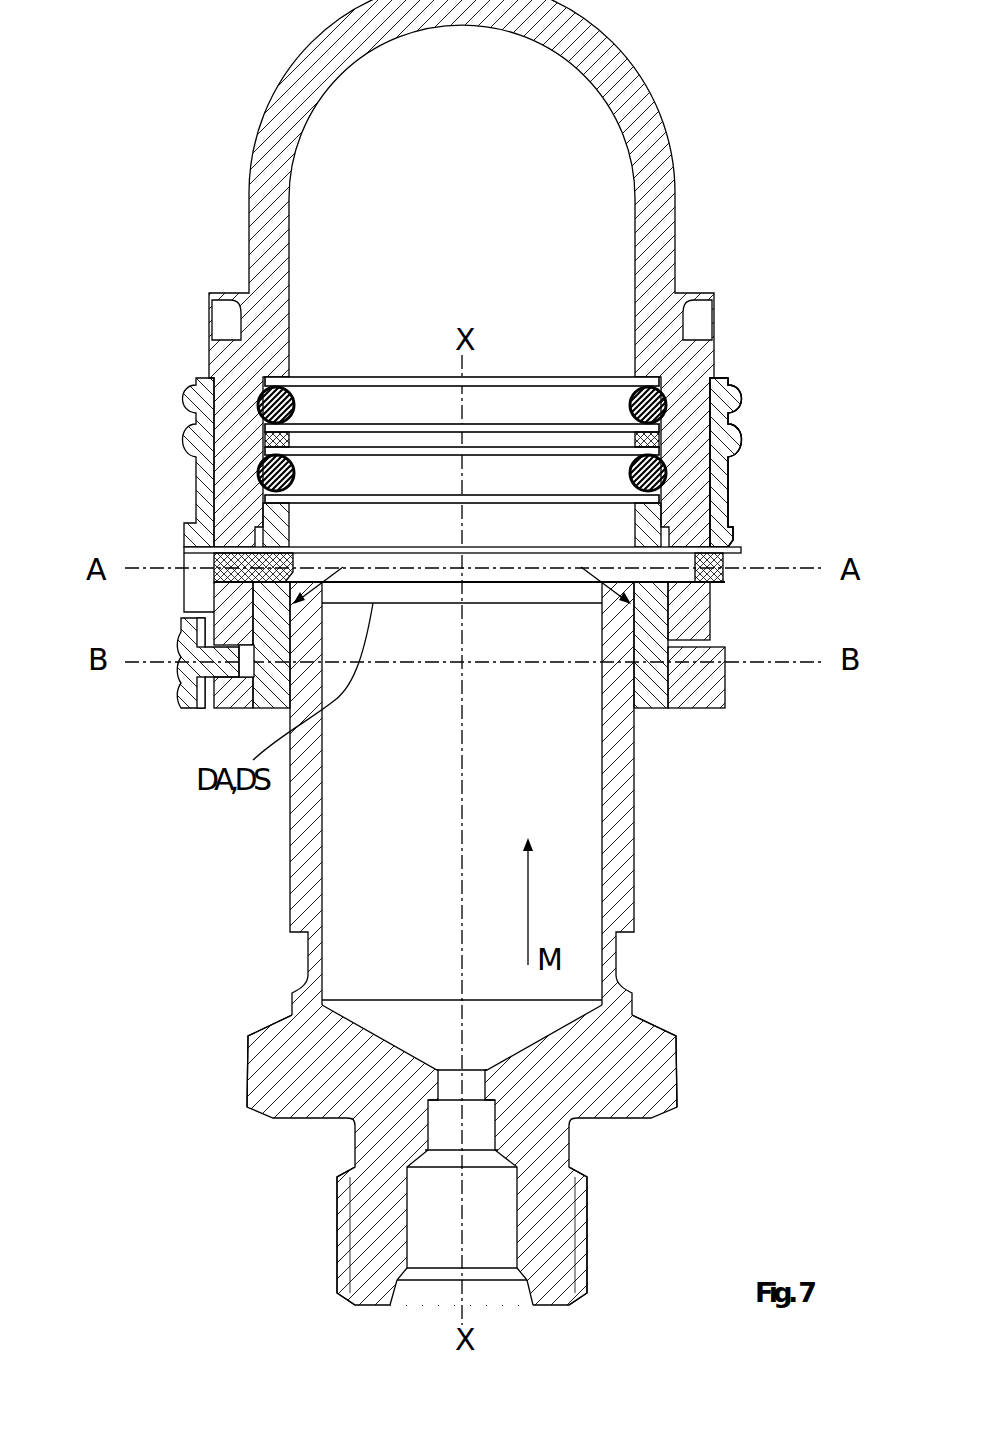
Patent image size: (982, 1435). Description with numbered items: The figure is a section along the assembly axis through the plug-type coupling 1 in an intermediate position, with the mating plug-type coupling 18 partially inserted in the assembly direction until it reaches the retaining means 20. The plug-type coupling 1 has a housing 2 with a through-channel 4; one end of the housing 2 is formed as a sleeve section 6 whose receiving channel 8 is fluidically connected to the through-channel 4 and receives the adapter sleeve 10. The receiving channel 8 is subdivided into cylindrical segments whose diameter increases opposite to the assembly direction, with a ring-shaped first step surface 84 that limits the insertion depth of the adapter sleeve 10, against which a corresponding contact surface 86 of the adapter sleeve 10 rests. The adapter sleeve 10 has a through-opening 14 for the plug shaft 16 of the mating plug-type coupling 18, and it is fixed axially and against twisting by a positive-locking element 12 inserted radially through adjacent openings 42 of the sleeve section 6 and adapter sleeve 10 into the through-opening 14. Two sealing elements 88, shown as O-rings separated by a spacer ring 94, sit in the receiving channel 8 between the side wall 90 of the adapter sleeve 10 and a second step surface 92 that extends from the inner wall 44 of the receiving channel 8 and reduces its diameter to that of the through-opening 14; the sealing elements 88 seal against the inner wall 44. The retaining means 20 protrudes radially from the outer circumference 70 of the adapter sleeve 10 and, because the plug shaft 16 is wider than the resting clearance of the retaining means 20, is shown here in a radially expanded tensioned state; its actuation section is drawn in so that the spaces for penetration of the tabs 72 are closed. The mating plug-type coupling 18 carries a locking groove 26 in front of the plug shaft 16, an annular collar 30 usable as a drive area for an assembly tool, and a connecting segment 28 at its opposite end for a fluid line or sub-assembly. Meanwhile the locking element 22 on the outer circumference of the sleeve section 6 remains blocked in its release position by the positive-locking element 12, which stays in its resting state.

The plug-type coupling 1 is at (216, 158).
The housing 2 is at (643, 143).
The through-channel 4 is at (449, 205).
The sleeve section 6 is at (697, 612).
The receiving channel 8 is at (552, 463).
The adapter sleeve 10 is at (700, 680).
The positive-locking element 12 is at (193, 522).
The through-opening 14 is at (657, 377).
The plug shaft 16 is at (615, 775).
The mating plug-type coupling 18 is at (226, 1013).
The retaining means 20 is at (192, 673).
The locking element 22 is at (733, 515).
The locking groove 26 is at (613, 960).
The connecting segment 28 is at (377, 1222).
The annular collar 30 is at (673, 1072).
The opening 42 is at (213, 590).
The inner wall 44 is at (264, 440).
The outer circumference 70 is at (237, 675).
The tabs 72 is at (213, 554).
The first step surface 84 is at (670, 497).
The contact surface 86 is at (726, 462).
The sealing element 88 is at (240, 317).
The side wall 90 is at (287, 498).
The second step surface 92 is at (262, 398).
The spacer ring 94 is at (660, 434).